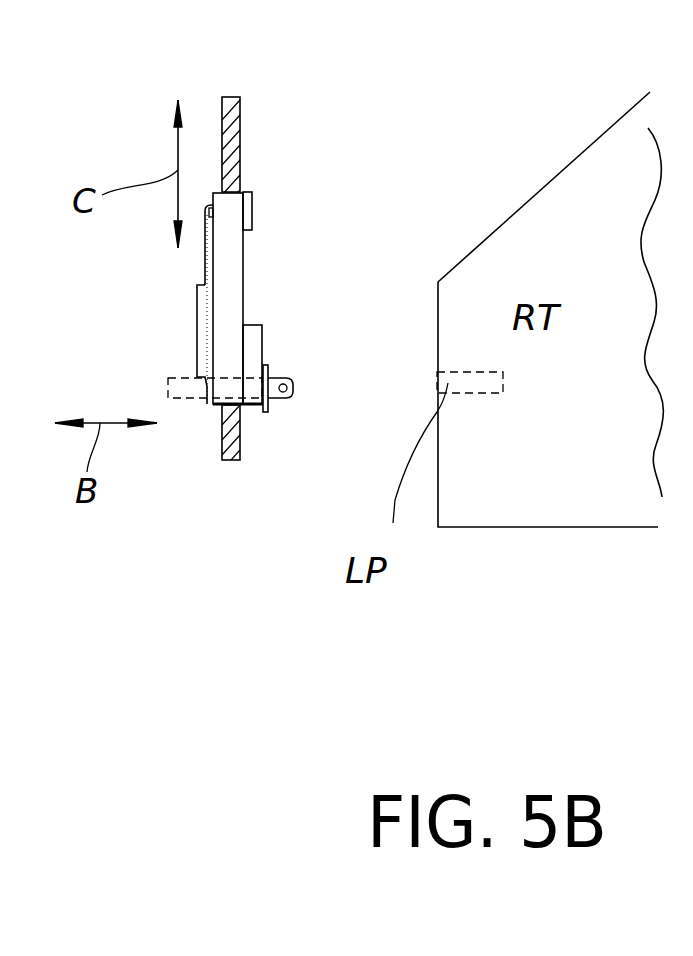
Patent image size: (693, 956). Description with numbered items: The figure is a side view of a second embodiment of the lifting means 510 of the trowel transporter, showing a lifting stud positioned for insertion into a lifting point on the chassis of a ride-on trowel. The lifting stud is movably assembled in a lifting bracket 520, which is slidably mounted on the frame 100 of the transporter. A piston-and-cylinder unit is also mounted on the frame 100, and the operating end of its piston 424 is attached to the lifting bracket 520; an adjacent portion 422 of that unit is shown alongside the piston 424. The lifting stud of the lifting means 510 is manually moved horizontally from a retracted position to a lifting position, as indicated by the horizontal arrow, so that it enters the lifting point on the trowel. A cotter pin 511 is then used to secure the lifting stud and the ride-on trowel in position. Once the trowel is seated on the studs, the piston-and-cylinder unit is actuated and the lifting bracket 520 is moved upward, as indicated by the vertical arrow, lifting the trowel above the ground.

The frame 100 is at (243, 122).
The lifting bracket 520 is at (233, 260).
The piston 424 is at (212, 248).
The guide member 422 is at (207, 335).
The lifting means 510 is at (290, 378).
The cotter pin 511 is at (267, 410).